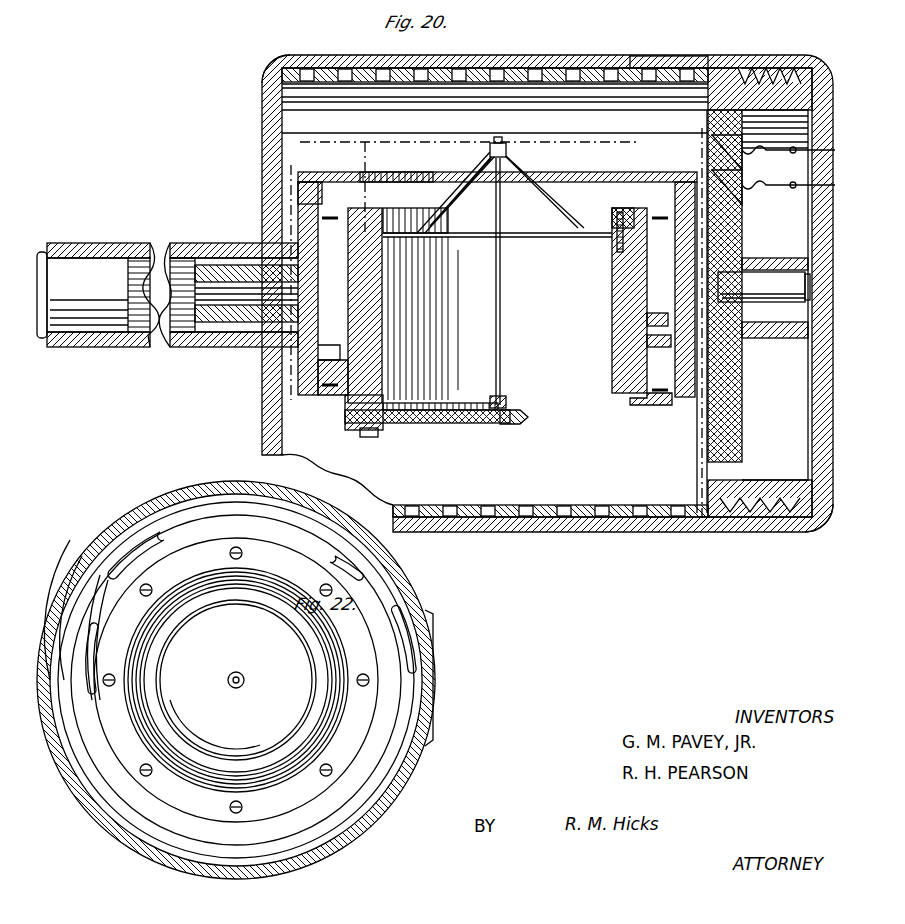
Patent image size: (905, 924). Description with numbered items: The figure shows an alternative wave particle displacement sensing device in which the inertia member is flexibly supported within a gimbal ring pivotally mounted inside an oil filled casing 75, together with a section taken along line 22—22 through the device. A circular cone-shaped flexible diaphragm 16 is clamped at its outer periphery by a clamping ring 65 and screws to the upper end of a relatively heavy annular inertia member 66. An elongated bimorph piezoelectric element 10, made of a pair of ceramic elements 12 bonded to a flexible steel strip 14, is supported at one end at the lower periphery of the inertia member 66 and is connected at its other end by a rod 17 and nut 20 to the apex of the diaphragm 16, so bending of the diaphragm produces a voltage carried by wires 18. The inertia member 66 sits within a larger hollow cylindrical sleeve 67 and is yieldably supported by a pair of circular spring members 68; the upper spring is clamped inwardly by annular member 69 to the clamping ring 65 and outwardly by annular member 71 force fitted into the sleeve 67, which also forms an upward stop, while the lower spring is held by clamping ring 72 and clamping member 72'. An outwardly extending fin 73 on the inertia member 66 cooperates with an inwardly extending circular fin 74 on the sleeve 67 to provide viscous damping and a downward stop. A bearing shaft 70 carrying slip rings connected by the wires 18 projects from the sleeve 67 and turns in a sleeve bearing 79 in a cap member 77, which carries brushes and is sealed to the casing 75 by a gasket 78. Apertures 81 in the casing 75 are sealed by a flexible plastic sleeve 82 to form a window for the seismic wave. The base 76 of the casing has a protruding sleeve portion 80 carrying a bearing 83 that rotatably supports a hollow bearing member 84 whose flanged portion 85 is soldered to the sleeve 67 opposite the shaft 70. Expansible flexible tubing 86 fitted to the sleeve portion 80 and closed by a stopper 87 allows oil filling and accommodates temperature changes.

In FIG. 20, the bimorph piezoelectric element 10 is at (452, 424).
In FIG. 20, the ceramic elements 12 is at (528, 417).
In FIG. 20, the flexible steel strip 14 is at (404, 424).
In FIG. 20, the diaphragm 16 is at (546, 206).
In FIG. 22, the diaphragm 16 is at (240, 641).
In FIG. 20, the rod 17 is at (501, 262).
In FIG. 22, the rod 17 is at (241, 675).
In FIG. 20, the wires 18 is at (700, 185).
In FIG. 20, the nut 20 is at (506, 402).
In FIG. 20, the section line 22 is at (700, 131).
In FIG. 20, the clamping ring 65 is at (618, 210).
In FIG. 22, the clamping ring 65 is at (160, 736).
In FIG. 20, the annular inertia member 66 is at (612, 312).
In FIG. 20, the hollow cylindrical sleeve 67 is at (690, 398).
In FIG. 20, the circular spring members 68 is at (330, 224).
In FIG. 22, the circular spring members 68 is at (392, 594).
In FIG. 20, the annular member 69 is at (356, 182).
In FIG. 20, the bearing shaft 70 is at (760, 288).
In FIG. 20, the annular member 71 is at (312, 182).
In FIG. 20, the clamping ring 72 is at (317, 382).
In FIG. 20, the clamping member 72' is at (639, 413).
In FIG. 20, the outwardly extending fin 73 is at (658, 313).
In FIG. 20, the inwardly extending circular fin 74 is at (650, 345).
In FIG. 20, the casing 75 is at (304, 60).
In FIG. 20, the base 76 is at (262, 172).
In FIG. 22, the base 76 is at (140, 512).
In FIG. 20, the cap member 77 is at (810, 530).
In FIG. 20, the gasket 78 is at (796, 60).
In FIG. 20, the sleeve bearing 79 is at (778, 282).
In FIG. 20, the sleeve portion 80 is at (225, 330).
In FIG. 20, the apertures 81 is at (600, 68).
In FIG. 20, the flexible plastic sleeve 82 is at (640, 58).
In FIG. 20, the bearing 83 is at (226, 272).
In FIG. 20, the hollow bearing member 84 is at (188, 332).
In FIG. 20, the flanged portion 85 is at (298, 372).
In FIG. 22, the flanged portion 85 is at (50, 625).
In FIG. 20, the expansible flexible tubing 86 is at (170, 242).
In FIG. 20, the stopper 87 is at (72, 280).